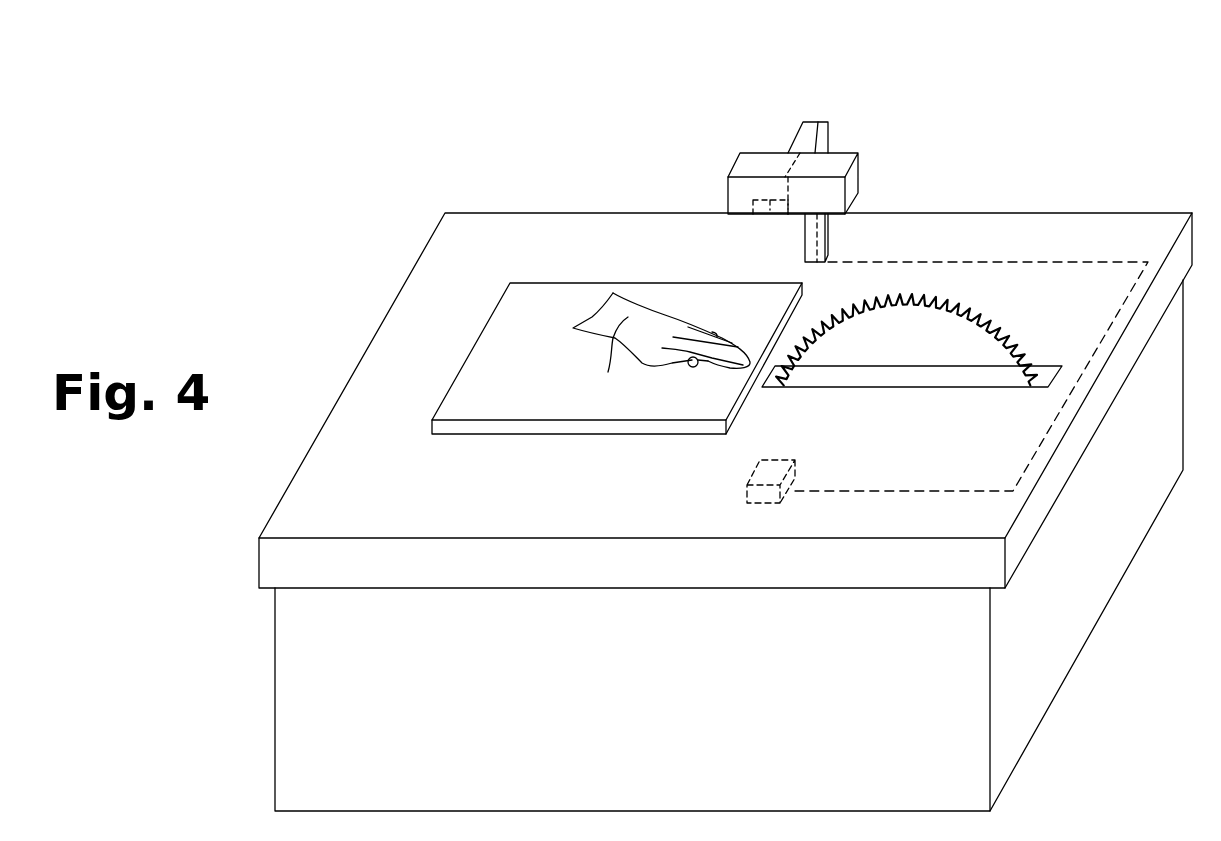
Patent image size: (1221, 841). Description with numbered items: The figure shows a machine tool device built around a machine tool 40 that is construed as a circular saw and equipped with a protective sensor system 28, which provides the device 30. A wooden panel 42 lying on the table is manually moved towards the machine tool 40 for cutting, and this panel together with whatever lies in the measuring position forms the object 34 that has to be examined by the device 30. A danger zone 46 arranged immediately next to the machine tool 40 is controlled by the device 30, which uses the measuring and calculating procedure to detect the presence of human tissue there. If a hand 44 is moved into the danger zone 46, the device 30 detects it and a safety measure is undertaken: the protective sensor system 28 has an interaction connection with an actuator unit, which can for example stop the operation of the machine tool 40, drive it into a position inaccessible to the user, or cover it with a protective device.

The protective sensor system 28 is at (855, 110).
The device 30 is at (770, 200).
The object 34 is at (787, 423).
The machine tool 40 is at (967, 353).
The wooden panel 42 is at (489, 367).
The hand 44 is at (661, 350).
The danger zone 46 is at (805, 312).